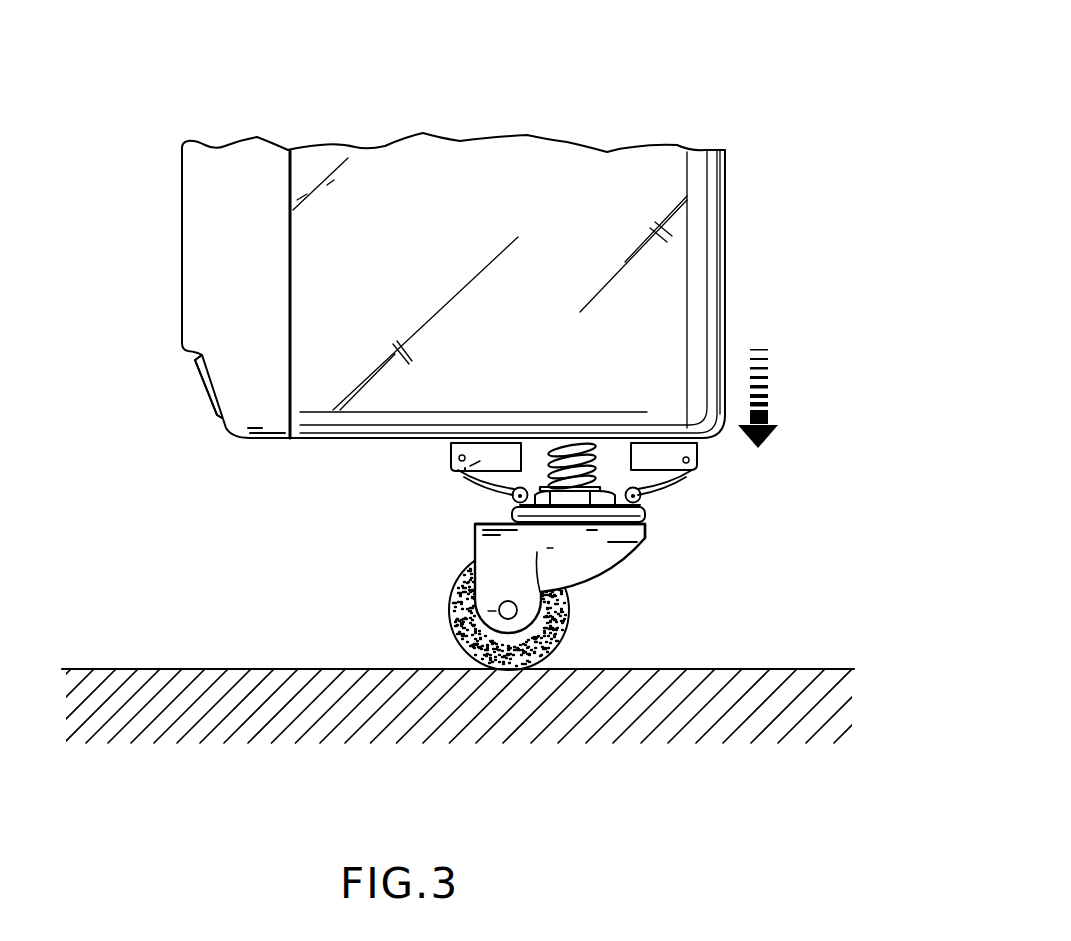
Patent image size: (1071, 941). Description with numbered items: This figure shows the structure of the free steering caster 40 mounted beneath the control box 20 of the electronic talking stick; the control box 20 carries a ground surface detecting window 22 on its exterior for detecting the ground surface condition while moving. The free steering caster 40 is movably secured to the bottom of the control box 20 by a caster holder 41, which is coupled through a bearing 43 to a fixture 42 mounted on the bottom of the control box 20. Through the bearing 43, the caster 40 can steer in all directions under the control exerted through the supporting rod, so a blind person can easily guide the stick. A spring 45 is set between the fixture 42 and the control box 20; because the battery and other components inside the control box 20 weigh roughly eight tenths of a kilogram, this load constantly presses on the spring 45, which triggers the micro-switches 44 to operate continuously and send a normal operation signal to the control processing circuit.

The control box 20 is at (593, 167).
The ground surface detecting window 22 is at (204, 387).
The free steering caster 40 is at (400, 583).
The caster holder 41 is at (622, 560).
The fixture 42 is at (645, 510).
The bearing 43 is at (646, 525).
The micro-switches 44 is at (460, 470).
The spring 45 is at (512, 491).